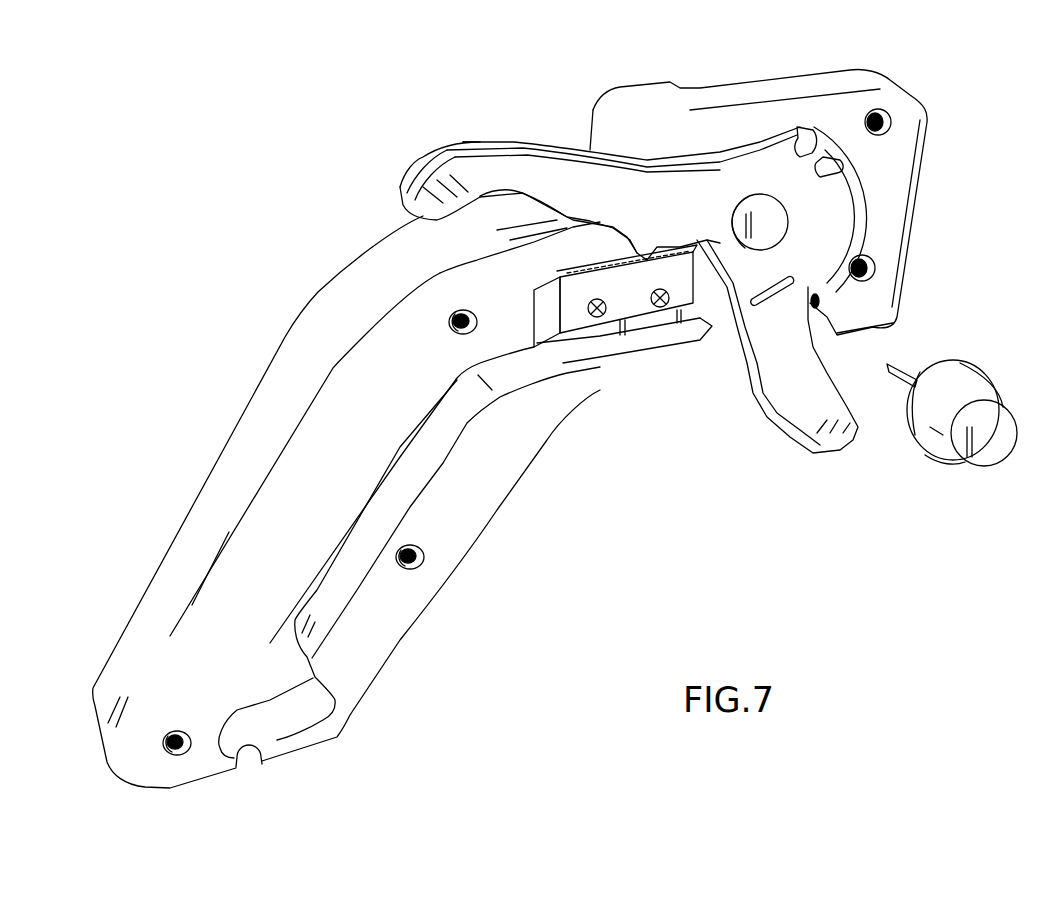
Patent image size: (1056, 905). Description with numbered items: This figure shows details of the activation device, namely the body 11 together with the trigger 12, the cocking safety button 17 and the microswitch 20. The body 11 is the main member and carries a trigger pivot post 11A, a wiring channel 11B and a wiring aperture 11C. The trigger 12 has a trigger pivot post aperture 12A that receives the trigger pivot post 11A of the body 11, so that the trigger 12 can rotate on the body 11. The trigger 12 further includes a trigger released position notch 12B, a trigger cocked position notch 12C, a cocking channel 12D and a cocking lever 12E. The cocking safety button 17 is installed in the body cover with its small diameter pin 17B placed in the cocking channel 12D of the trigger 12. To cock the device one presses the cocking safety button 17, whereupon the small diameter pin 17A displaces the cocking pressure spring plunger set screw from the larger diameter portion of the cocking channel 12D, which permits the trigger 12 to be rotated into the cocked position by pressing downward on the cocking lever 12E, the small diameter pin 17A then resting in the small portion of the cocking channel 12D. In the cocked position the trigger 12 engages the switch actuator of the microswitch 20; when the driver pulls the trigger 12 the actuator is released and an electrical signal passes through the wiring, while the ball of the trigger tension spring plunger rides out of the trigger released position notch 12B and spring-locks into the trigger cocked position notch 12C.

The body 11 is at (300, 343).
The trigger pivot post 11A is at (758, 215).
The wiring channel 11B is at (350, 567).
The wiring aperture 11C is at (248, 744).
The trigger 12 is at (803, 440).
The trigger pivot post aperture 12A is at (733, 207).
The trigger released position notch 12B is at (812, 128).
The trigger cocked position notch 12C is at (847, 162).
The cocking channel 12D is at (767, 292).
The cocking lever 12E is at (530, 165).
The cocking safety button 17 is at (955, 445).
The small diameter pin 17A is at (965, 360).
The small diameter pin 17B is at (893, 370).
The microswitch 20 is at (615, 305).